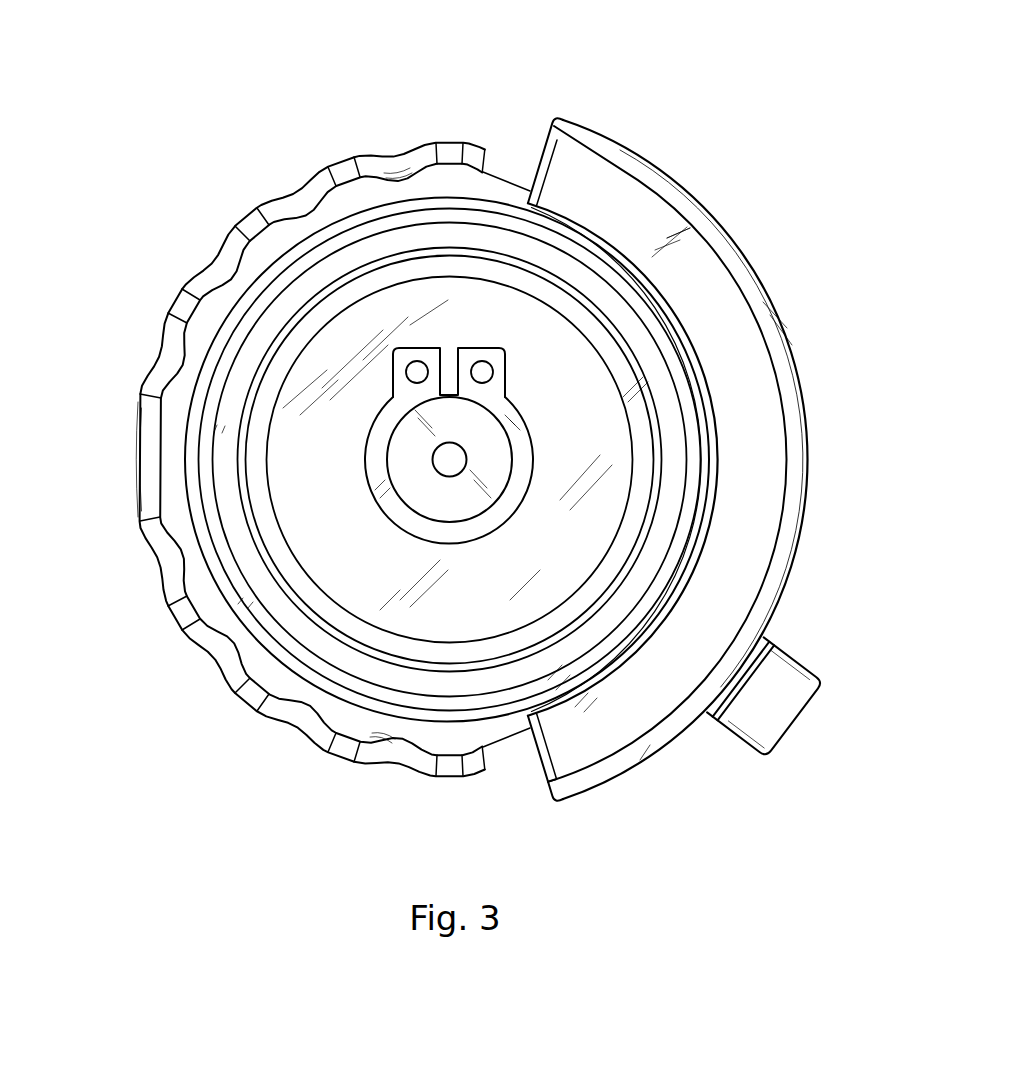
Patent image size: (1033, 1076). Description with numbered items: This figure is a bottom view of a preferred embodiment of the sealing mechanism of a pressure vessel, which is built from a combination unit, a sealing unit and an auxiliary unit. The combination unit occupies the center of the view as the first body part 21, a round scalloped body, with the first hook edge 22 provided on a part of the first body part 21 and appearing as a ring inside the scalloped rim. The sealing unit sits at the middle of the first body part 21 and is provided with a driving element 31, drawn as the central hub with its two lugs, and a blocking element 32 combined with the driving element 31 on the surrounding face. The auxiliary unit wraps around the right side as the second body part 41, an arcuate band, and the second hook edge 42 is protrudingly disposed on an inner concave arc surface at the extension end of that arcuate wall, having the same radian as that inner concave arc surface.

The first body part 21 is at (285, 727).
The first hook edge 22 is at (407, 195).
The driving element 31 is at (413, 477).
The blocking element 32 is at (302, 388).
The second body part 41 is at (672, 175).
The second hook edge 42 is at (557, 202).